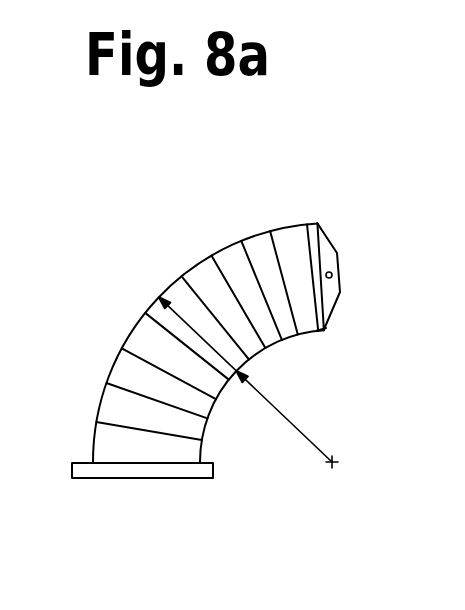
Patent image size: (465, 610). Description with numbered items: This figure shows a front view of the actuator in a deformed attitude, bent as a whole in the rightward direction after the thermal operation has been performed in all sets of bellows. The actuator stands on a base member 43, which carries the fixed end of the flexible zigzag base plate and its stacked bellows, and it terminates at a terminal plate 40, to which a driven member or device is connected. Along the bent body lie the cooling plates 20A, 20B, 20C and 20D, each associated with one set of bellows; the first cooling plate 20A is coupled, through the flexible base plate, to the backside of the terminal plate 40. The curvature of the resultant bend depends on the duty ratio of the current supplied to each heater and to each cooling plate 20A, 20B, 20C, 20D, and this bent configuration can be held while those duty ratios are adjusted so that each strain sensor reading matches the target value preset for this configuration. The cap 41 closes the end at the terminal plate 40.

The first cooling plate 20A is at (306, 249).
The second cooling plate 20B is at (266, 258).
The third cooling plate 20C is at (240, 268).
The fourth cooling plate 20D is at (214, 282).
The terminal plate 40 is at (324, 331).
The end cap connector 41 is at (331, 245).
The base member 43 is at (167, 472).